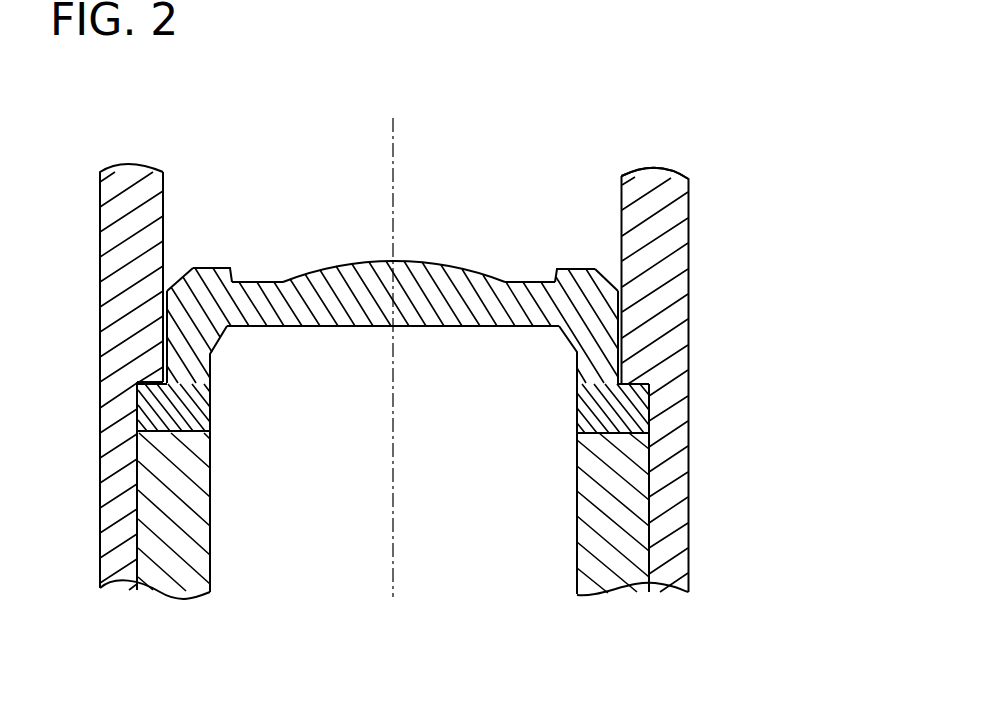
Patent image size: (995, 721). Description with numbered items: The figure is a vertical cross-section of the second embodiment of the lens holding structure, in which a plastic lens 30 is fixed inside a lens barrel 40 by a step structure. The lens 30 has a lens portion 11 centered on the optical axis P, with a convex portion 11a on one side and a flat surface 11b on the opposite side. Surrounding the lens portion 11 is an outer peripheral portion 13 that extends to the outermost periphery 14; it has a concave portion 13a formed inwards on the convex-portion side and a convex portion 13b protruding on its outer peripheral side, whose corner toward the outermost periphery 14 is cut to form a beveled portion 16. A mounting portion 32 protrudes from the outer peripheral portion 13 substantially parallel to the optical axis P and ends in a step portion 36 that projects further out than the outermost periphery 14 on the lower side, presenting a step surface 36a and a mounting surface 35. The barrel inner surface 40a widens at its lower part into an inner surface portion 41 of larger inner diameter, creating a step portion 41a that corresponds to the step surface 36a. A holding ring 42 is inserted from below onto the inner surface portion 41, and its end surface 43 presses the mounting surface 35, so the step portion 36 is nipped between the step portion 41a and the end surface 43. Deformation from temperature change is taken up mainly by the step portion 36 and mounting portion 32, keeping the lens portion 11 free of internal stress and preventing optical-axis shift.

The lens 30 is at (425, 192).
The optical axis P is at (392, 138).
The lens barrel 40 is at (704, 207).
The inner surface 40a is at (622, 196).
The outermost periphery 14 is at (622, 303).
The step portion (step surface) 41a is at (138, 395).
The lens portion 11 is at (340, 280).
The beveled portion 16 is at (182, 278).
The convex portion 13b is at (215, 278).
The concave portion 13a is at (258, 278).
The convex portion 11a is at (453, 263).
The flat surface 11b is at (473, 328).
The outer peripheral portion 13 is at (612, 255).
The mounting portion 32 is at (606, 338).
The step surface 36a is at (638, 383).
The step portion 36 is at (628, 410).
The mounting surface 35 is at (617, 433).
The end surface 43 is at (178, 432).
The inner surface portion 41 is at (137, 505).
The holding ring 42 is at (618, 573).